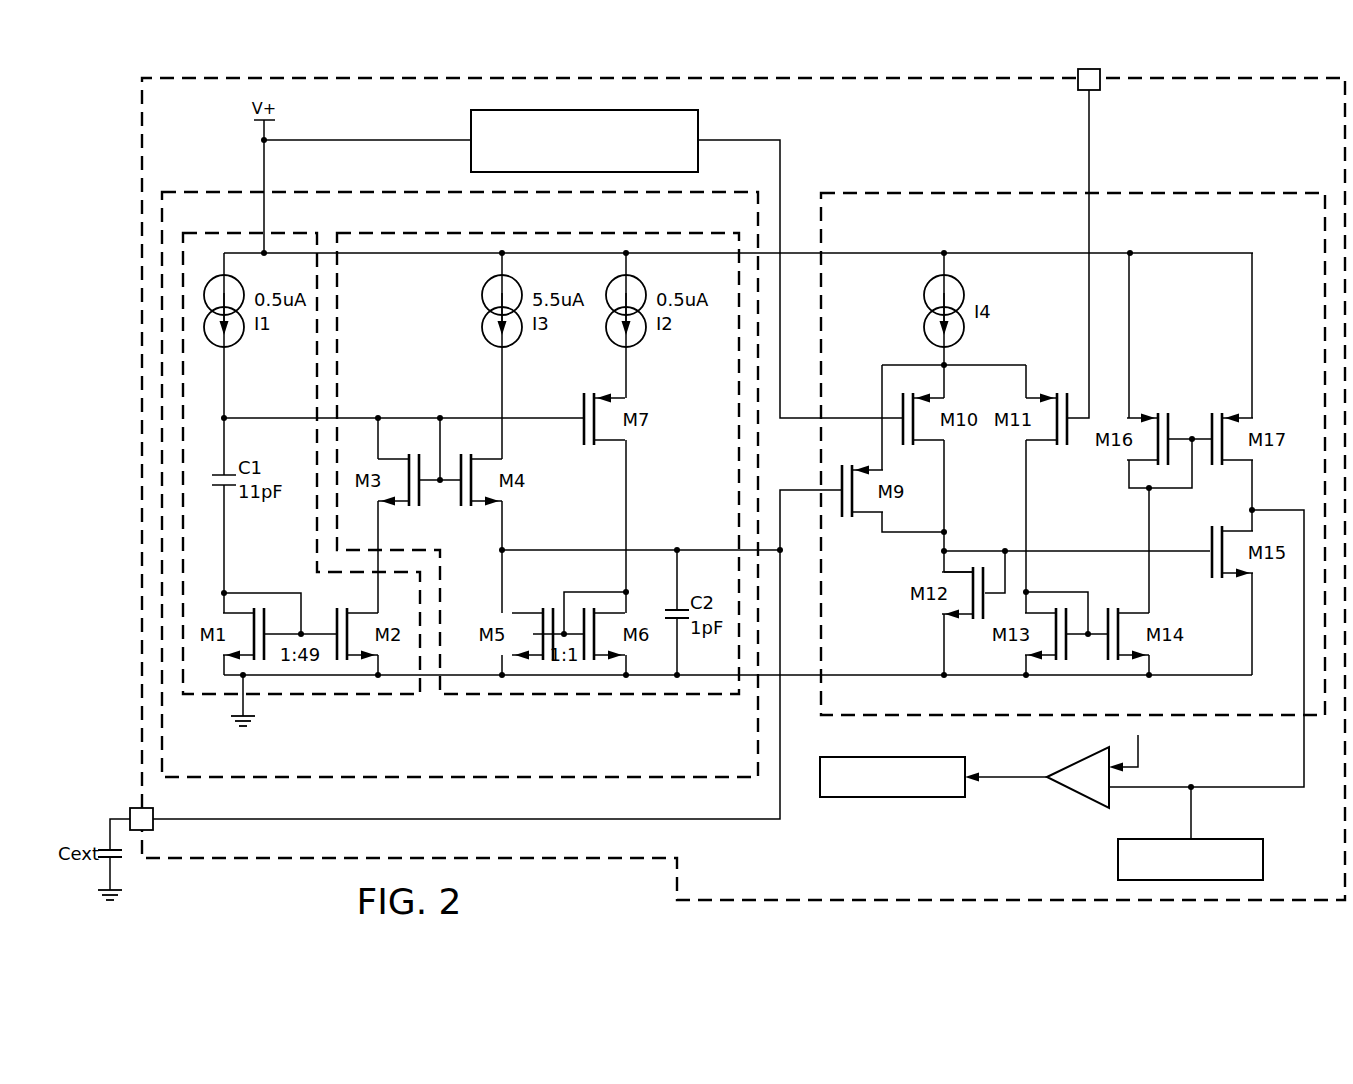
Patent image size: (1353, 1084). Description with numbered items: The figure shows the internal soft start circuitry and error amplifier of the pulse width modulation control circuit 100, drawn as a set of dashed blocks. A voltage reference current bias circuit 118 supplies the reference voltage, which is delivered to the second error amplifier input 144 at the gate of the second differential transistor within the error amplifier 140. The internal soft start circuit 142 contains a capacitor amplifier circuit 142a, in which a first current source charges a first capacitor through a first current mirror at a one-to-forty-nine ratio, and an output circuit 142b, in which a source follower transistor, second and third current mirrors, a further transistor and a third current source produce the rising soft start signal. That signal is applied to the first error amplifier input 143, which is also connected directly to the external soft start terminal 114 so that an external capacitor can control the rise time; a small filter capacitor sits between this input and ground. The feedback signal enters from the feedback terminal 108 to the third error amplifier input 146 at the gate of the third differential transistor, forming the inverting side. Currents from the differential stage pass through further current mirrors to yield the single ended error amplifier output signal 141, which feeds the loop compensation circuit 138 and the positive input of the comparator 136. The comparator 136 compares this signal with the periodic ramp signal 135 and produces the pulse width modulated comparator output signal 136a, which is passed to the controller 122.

The pulse width modulation control circuit 100 is at (877, 130).
The terminal 108 is at (1080, 91).
The external soft start terminal 114 is at (130, 813).
The voltage reference current bias circuit 118 is at (471, 122).
The controller 122 is at (893, 798).
The periodic ramp signal 135 is at (1141, 752).
The comparator 136 is at (1078, 795).
The pulse width modulated comparator output signal 136a is at (1006, 781).
The loop compensation circuit 138 is at (1265, 859).
The error amplifier 140 is at (1221, 186).
The error amplifier output signal 141 is at (1193, 808).
The internal soft start circuit 142 is at (212, 186).
The capacitor amplifier circuit 142a is at (287, 704).
The output circuit 142b is at (588, 704).
The first error amplifier input 143 is at (730, 822).
The second error amplifier input 144 is at (780, 170).
The third error amplifier input 146 is at (1088, 306).